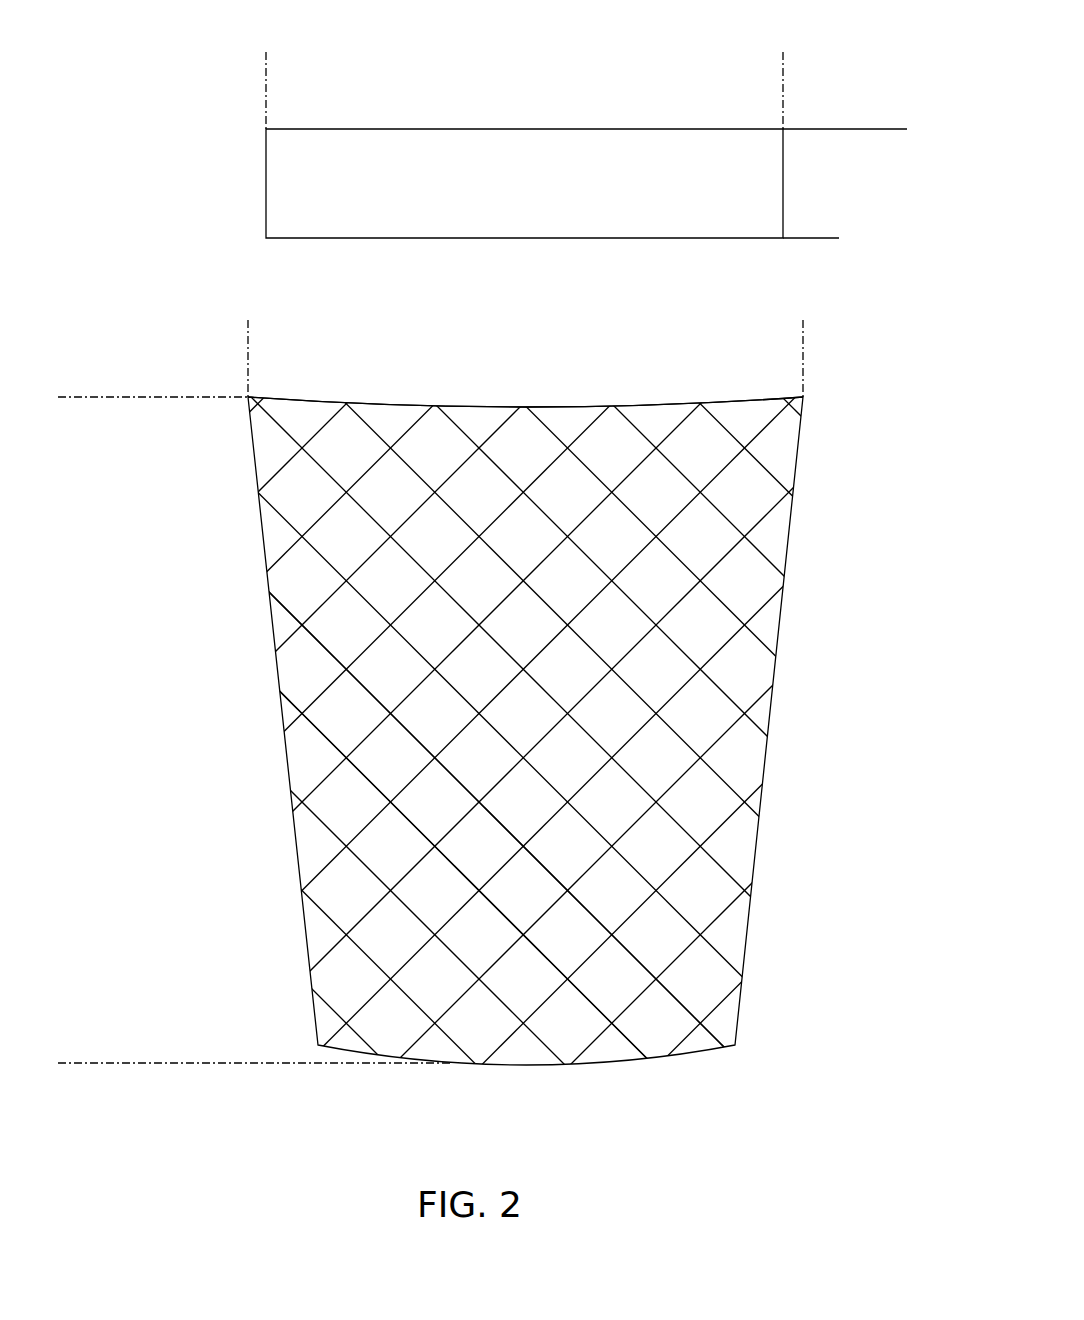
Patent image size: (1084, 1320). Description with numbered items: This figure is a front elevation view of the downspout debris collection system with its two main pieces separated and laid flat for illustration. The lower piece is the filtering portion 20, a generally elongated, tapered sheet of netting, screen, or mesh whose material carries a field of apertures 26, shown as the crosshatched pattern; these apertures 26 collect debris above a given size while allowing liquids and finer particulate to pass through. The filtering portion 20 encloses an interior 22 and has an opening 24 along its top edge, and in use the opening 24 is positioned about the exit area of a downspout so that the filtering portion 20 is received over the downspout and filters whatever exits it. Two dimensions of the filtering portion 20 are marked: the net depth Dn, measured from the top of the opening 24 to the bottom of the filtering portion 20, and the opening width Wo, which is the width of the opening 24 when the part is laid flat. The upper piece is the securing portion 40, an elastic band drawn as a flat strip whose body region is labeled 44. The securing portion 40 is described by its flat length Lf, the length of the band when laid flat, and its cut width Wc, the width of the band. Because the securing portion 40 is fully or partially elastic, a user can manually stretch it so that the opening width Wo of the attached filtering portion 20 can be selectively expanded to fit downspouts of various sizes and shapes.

The filtering portion 20 is at (785, 567).
The interior 22 is at (563, 428).
The opening 24 is at (327, 383).
The apertures 26 is at (762, 665).
The securing portion 40 is at (352, 129).
The strip body 44 is at (602, 206).
The flat length Lf is at (843, 72).
The cut width Wc is at (811, 297).
The opening width Wo is at (803, 338).
The net depth Dn is at (102, 1125).